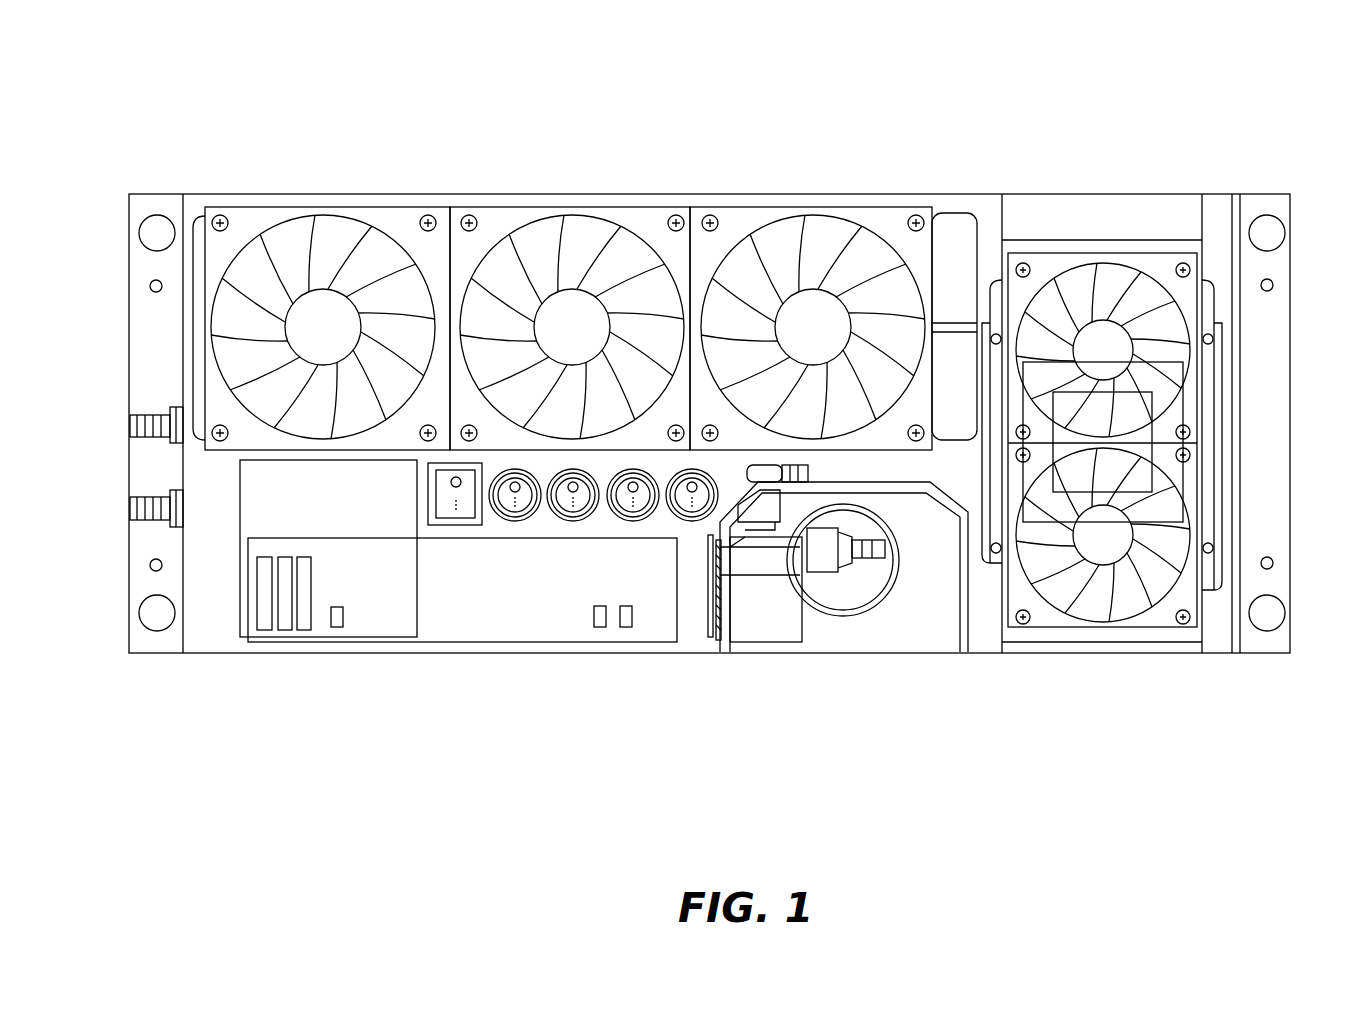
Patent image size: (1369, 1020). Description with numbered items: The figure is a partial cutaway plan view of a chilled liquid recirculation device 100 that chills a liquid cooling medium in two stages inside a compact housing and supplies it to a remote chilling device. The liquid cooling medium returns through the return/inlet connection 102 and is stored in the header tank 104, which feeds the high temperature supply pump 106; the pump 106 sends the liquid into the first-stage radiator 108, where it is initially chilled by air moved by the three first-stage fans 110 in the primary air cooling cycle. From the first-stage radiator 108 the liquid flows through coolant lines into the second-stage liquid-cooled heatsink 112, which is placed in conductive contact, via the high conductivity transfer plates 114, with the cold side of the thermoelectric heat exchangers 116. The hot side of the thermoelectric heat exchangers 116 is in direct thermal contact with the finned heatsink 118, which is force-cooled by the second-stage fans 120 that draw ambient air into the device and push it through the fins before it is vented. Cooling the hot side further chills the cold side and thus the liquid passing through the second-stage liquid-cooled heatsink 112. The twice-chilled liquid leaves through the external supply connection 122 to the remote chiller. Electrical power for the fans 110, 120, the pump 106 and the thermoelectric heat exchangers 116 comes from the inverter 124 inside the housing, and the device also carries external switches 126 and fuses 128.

The chilled liquid recirculation device 100 is at (93, 102).
The return/inlet connection 102 is at (130, 425).
The header tank 104 is at (927, 602).
The high temperature supply pump 106 is at (767, 603).
The first-stage radiator 108 is at (950, 252).
The first-stage fans 110 is at (790, 250).
The second-stage liquid-cooled heatsink 112 is at (1208, 358).
The high conductivity transfer plates 114 is at (1103, 583).
The thermoelectric heat exchangers 116 is at (1083, 497).
The finned heatsink 118 is at (1030, 245).
The second-stage fans 120 is at (1189, 491).
The external supply connection 122 is at (130, 508).
The inverter 124 is at (507, 585).
The external switches 126 is at (463, 505).
The fuses 128 is at (313, 626).